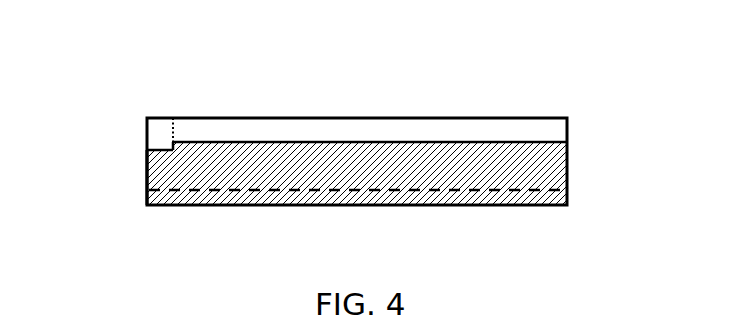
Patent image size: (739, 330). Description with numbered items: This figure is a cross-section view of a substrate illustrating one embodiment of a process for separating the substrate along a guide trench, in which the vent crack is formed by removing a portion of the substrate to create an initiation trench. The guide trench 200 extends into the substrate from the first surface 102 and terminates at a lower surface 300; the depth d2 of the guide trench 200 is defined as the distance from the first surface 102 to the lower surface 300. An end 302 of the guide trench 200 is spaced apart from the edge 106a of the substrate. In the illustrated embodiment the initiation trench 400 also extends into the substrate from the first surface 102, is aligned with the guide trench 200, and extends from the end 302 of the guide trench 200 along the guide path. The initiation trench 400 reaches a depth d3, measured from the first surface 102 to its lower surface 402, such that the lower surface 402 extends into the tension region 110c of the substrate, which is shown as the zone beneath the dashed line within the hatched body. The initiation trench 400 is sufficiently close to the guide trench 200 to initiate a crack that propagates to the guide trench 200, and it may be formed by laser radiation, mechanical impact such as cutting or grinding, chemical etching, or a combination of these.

The first surface 102 is at (352, 116).
The guide trench 200 is at (446, 117).
The lower surface 300 is at (530, 137).
The end 302 is at (184, 125).
The initiation trench 400 is at (153, 127).
The lower surface 402 is at (168, 145).
The edge 106a is at (138, 190).
The tension region 110c is at (553, 182).
The depth of the guide trench d2 is at (572, 118).
The depth of the initiation trench d3 is at (140, 118).